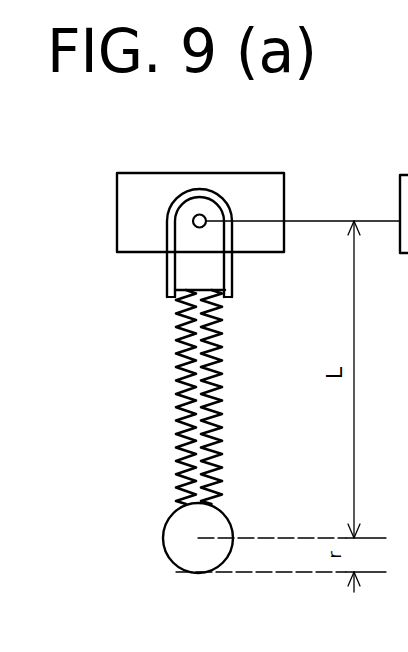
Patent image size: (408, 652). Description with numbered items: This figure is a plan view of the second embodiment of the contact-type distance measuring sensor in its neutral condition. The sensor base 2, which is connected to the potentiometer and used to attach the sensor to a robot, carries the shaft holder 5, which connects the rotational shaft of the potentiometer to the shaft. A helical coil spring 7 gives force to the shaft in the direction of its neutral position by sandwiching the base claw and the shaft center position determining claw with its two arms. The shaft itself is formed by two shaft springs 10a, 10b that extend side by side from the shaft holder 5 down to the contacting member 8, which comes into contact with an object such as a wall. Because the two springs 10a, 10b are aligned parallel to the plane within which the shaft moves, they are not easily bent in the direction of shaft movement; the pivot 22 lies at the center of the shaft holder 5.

The sensor base 2 is at (263, 182).
The pivot pin 22 is at (199, 213).
The shaft holder 5 is at (181, 228).
The helical coil spring 7 is at (233, 270).
The shaft spring 10a is at (180, 393).
The shaft spring 10b is at (216, 398).
The contacting member 8 is at (183, 555).